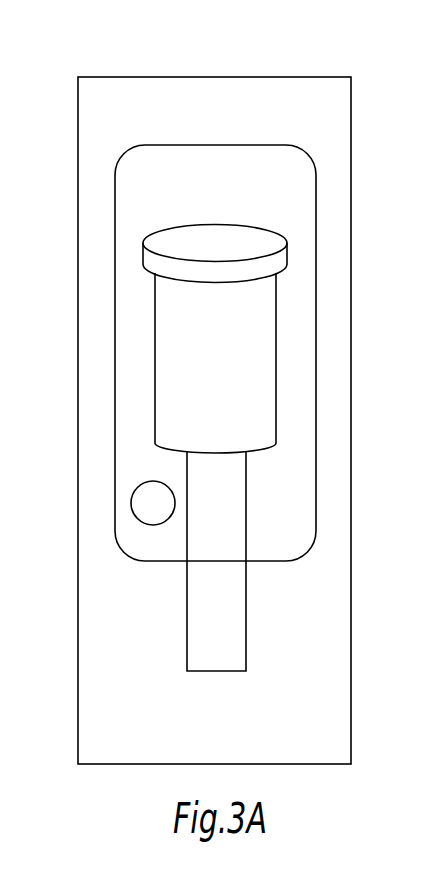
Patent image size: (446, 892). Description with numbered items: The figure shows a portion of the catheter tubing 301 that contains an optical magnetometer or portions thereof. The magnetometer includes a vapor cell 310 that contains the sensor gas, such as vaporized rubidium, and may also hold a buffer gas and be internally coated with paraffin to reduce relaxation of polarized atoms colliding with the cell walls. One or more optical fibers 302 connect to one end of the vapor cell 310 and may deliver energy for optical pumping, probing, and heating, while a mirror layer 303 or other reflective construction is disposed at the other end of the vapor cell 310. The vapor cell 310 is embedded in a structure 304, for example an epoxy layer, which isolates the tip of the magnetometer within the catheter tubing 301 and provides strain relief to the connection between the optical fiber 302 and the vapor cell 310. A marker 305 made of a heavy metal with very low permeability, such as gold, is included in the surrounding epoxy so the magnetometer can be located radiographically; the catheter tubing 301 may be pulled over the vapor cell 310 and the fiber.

The catheter tubing 301 is at (353, 112).
The optical fiber 302 is at (247, 629).
The mirror layer 303 is at (217, 224).
The structure 304 is at (317, 219).
The marker 305 is at (154, 525).
The vapor cell 310 is at (272, 347).